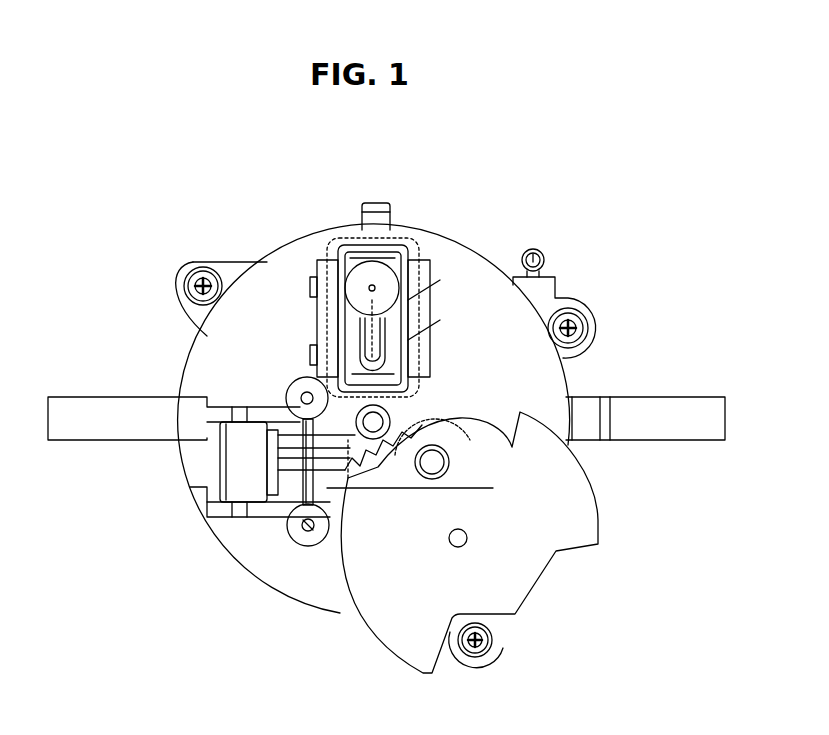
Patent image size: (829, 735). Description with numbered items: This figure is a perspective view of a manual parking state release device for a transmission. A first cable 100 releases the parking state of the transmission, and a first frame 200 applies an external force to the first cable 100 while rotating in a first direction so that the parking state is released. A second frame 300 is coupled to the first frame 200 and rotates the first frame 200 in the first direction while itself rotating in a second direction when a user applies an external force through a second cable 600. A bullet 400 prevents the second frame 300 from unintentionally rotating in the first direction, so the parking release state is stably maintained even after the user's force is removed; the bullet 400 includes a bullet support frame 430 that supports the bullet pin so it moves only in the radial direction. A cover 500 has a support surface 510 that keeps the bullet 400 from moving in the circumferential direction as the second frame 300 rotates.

The first cable 100 is at (313, 546).
The first frame 200 is at (480, 433).
The second frame 300 is at (453, 477).
The bullet 400 is at (352, 278).
The bullet support frame 430 is at (372, 280).
The cover 500 is at (468, 280).
The support surface 510 is at (417, 305).
The second cable 600 is at (536, 248).